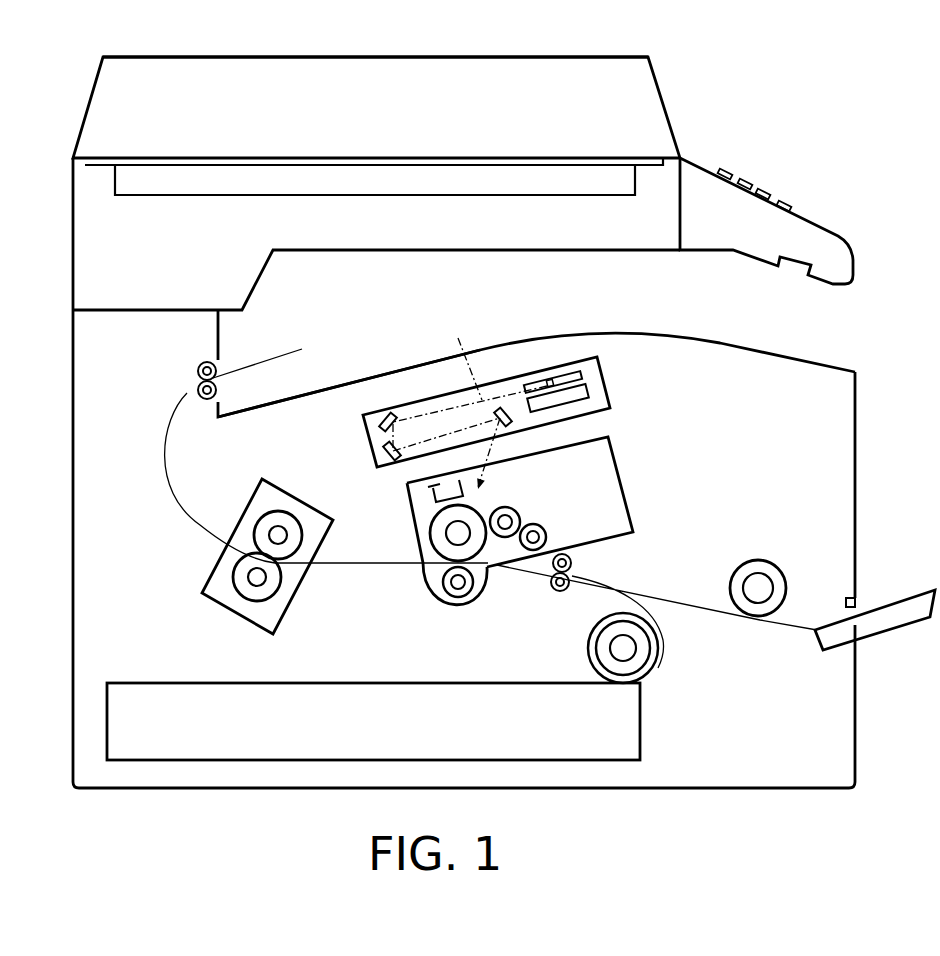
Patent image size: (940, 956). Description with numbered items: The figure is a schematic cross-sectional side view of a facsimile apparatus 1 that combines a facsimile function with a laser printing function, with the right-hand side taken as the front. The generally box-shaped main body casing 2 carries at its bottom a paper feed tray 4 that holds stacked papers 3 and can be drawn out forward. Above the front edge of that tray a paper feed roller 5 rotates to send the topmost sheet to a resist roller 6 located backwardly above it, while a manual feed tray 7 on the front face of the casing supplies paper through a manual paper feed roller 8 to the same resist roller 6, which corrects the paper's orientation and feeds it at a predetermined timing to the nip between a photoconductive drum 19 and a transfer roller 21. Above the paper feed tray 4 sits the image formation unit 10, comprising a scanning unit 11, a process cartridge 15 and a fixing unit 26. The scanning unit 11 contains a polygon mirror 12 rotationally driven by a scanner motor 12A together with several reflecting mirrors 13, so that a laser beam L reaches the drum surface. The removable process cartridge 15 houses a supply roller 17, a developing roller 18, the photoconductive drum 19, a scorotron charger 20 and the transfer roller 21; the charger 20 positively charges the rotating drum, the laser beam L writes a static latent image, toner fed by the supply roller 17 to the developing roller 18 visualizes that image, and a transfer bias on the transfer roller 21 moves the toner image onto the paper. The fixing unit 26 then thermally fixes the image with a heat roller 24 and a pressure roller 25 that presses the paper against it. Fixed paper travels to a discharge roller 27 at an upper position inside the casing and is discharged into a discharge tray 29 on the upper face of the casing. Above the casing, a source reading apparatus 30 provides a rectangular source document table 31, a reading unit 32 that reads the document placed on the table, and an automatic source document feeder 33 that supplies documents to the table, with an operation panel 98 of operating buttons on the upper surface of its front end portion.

The facsimile apparatus 1 is at (816, 175).
The main body casing 2 is at (73, 330).
The papers 3 is at (297, 350).
The paper feed tray 4 is at (223, 700).
The paper feed roller 5 is at (657, 653).
The resist roller 6 is at (573, 583).
The manual feed tray 7 is at (903, 607).
The manual paper feed roller 8 is at (758, 567).
The image formation unit 10 is at (365, 605).
The scanning unit 11 is at (445, 392).
The polygon mirror 12 is at (563, 373).
The scanner motor 12A is at (590, 397).
The reflecting mirrors 13 is at (503, 407).
The laser beam L is at (467, 355).
The process cartridge 15 is at (622, 473).
The supply roller 17 is at (542, 530).
The developing roller 18 is at (507, 510).
The photoconductive drum 19 is at (428, 528).
The scorotron charger 20 is at (437, 498).
The transfer roller 21 is at (468, 590).
The heat roller 24 is at (292, 525).
The pressure roller 25 is at (282, 582).
The fixing unit 26 is at (278, 480).
The discharge roller 27 is at (197, 390).
The discharge tray 29 is at (380, 372).
The source reading apparatus 30 is at (73, 215).
The source document table 31 is at (436, 163).
The reading unit 32 is at (372, 190).
The automatic source document feeder 33 is at (633, 78).
The operation panel 98 is at (755, 190).